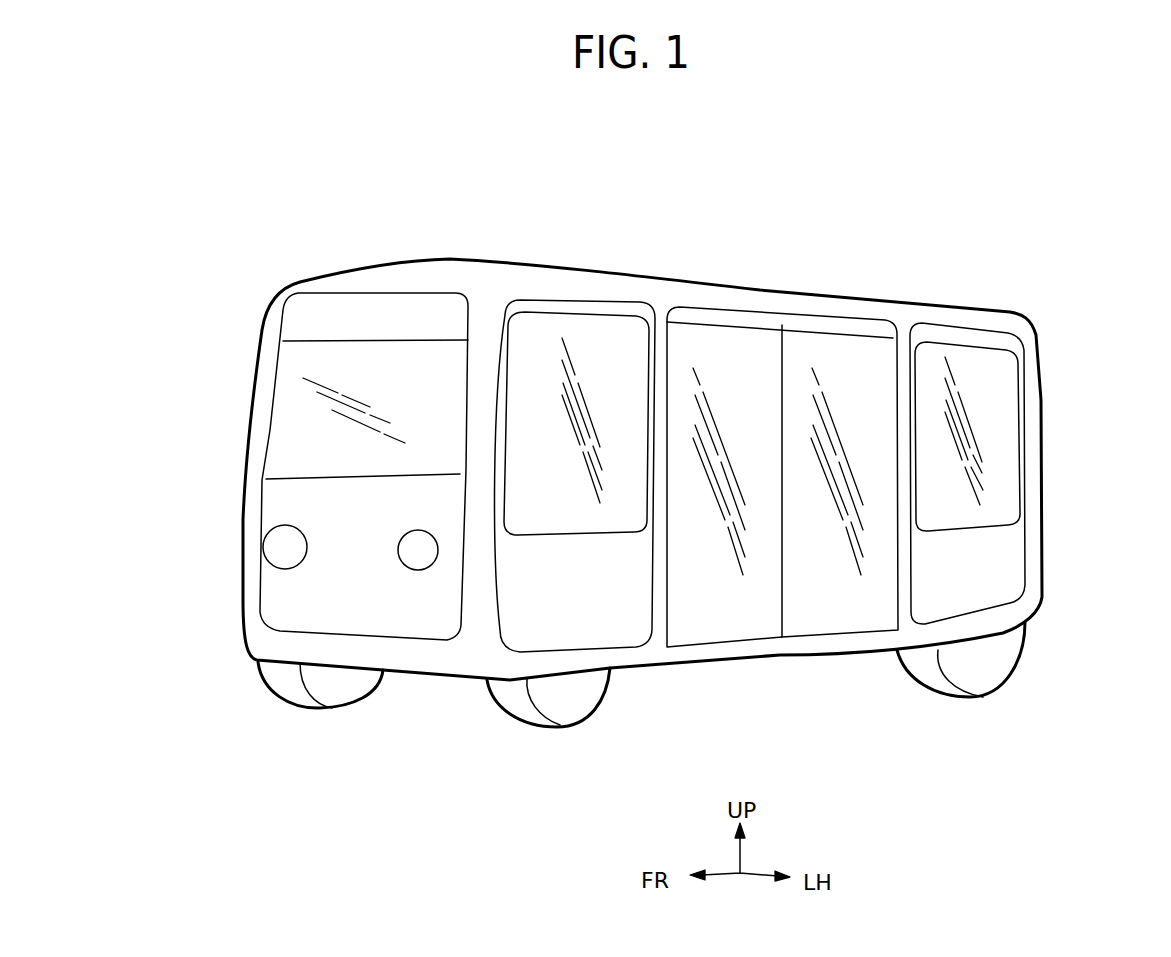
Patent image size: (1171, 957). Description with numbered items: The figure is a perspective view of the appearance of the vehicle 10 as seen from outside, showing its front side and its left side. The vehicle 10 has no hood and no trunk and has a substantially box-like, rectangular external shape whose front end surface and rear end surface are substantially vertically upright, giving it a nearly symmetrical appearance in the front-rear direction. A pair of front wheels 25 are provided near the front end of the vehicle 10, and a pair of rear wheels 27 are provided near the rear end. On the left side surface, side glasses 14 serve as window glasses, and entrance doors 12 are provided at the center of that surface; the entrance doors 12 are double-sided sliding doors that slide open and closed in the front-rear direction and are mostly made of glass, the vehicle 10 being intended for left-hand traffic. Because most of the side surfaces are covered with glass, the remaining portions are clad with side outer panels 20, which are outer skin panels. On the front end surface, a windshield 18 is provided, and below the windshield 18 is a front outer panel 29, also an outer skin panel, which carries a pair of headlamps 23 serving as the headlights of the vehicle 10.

The vehicle 10 is at (163, 277).
The entrance doors 12 is at (742, 363).
The side glasses 14 is at (610, 348).
The windshield 18 is at (285, 420).
The side outer panels 20 is at (612, 622).
The headlamps 23 is at (287, 547).
The front wheels 25 is at (337, 693).
The rear wheels 27 is at (980, 670).
The front outer panel 29 is at (298, 605).